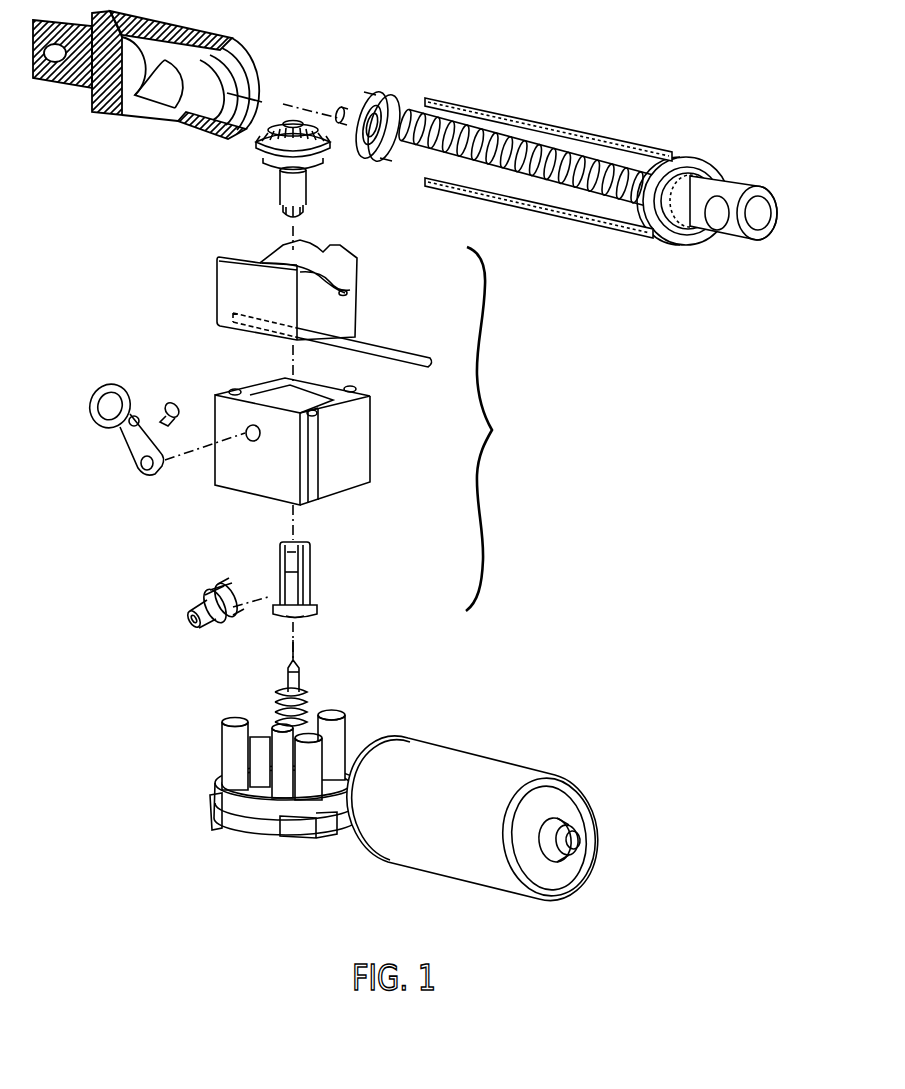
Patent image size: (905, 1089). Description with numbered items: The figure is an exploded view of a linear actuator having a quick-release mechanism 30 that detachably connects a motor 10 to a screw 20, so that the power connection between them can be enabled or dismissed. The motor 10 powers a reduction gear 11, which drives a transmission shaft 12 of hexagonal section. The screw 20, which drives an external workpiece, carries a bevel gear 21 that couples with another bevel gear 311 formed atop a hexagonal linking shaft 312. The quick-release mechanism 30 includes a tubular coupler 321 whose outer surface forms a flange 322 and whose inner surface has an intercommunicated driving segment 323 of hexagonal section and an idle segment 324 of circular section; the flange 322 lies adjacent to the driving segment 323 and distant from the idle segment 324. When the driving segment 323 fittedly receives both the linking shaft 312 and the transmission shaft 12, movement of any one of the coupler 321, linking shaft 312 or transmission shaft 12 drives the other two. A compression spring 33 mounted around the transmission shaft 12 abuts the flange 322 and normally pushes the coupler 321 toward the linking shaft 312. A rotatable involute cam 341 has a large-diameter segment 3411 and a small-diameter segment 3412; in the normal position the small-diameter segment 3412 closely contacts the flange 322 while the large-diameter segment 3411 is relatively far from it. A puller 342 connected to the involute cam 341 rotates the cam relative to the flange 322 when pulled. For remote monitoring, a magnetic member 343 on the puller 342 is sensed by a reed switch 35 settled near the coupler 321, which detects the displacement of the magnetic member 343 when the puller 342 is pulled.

The motor 10 is at (492, 757).
The reduction gear 11 is at (347, 727).
The transmission shaft 12 is at (302, 675).
The screw 20 is at (520, 128).
The bevel gear 21 is at (343, 106).
The quick-release mechanism 30 is at (494, 429).
The spring 33 is at (274, 690).
The reed switch 35 is at (232, 320).
The bevel gear 311 is at (257, 137).
The linking shaft 312 is at (283, 209).
The coupler 321 is at (305, 580).
The flange 322 is at (318, 608).
The driving segment 323 is at (297, 622).
The idle segment 324 is at (292, 562).
The involute cam 341 is at (228, 594).
The puller 342 is at (124, 448).
The magnetic member 343 is at (165, 398).
The large-diameter segment 3411 is at (212, 594).
The small-diameter segment 3412 is at (220, 628).